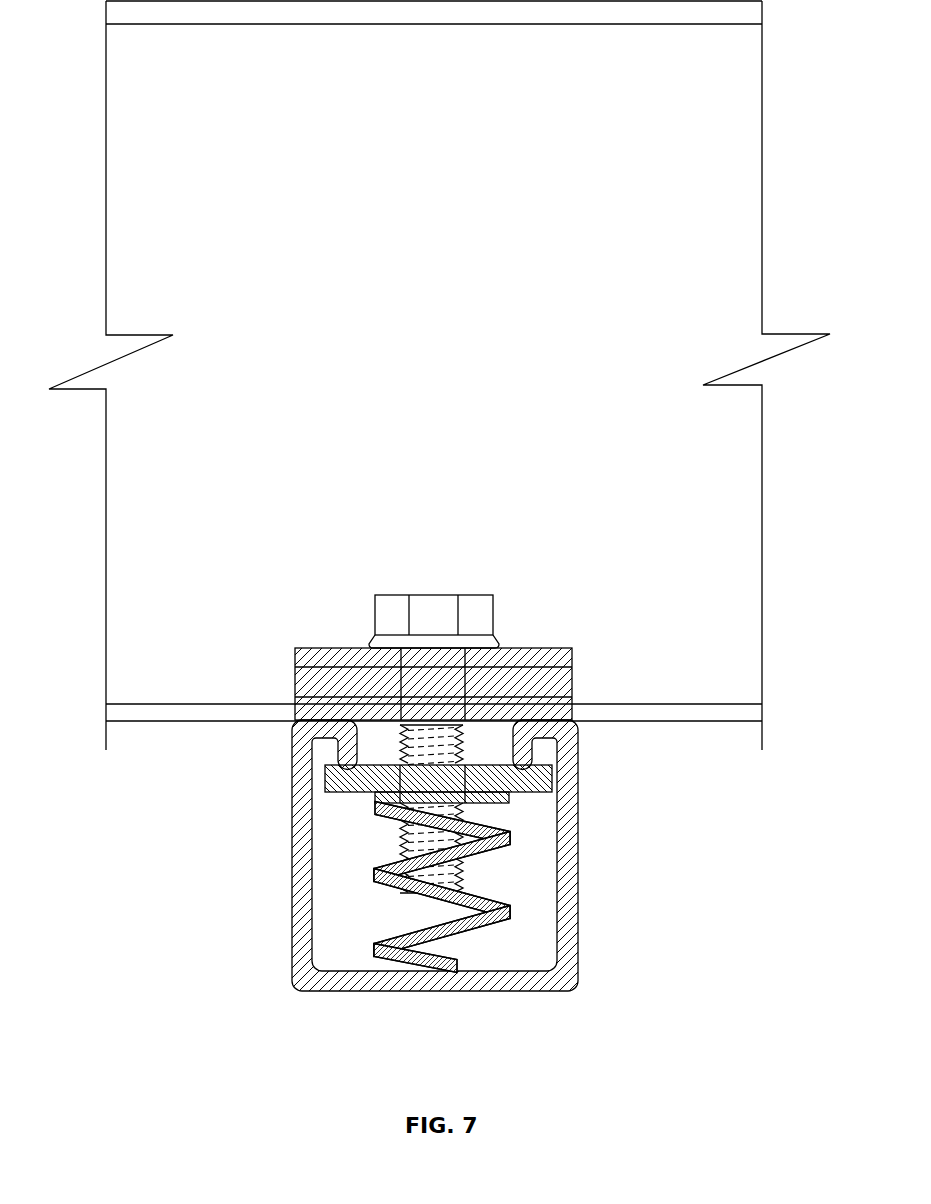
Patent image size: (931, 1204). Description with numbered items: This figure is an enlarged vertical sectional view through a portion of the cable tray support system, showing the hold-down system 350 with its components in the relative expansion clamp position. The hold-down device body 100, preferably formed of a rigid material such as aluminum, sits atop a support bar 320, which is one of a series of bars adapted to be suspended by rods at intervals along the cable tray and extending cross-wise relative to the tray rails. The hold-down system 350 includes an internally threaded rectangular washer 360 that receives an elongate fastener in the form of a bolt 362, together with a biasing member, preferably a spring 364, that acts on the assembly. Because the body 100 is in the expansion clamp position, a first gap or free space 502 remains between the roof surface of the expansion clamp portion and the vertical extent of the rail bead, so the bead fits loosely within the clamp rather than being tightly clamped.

The hold-down device body 100 is at (330, 648).
The support bar 320 is at (298, 872).
The hold-down system 350 is at (520, 630).
The bolt 362 is at (435, 615).
The internally threaded rectangular washer 360 is at (527, 794).
The spring 364 is at (480, 920).
The first gap or free space 502 is at (572, 702).